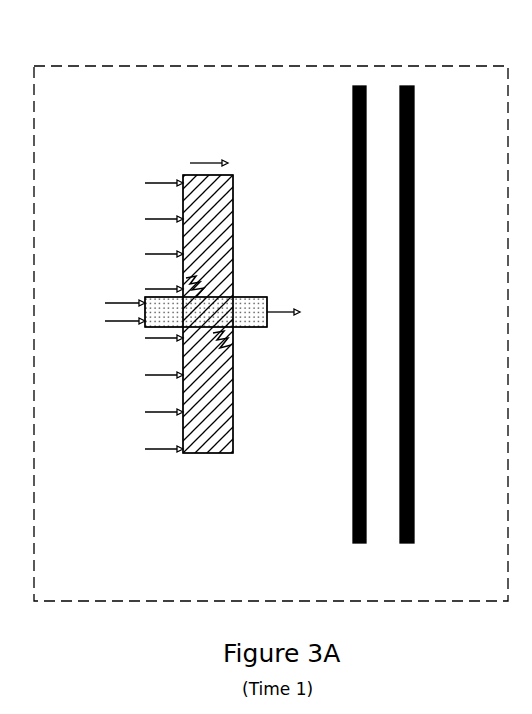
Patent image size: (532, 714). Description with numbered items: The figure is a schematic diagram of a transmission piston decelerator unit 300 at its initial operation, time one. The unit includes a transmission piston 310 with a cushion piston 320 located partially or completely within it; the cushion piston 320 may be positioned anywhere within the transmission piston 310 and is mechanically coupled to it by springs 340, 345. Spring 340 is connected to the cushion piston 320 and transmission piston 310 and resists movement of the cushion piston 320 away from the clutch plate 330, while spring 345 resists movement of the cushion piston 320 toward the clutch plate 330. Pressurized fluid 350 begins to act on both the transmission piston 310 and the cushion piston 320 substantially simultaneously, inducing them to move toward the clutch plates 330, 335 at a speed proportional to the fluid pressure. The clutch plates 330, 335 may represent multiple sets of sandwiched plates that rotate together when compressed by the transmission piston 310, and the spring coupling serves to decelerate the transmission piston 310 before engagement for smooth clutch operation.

The transmission piston decelerator unit 300 is at (111, 62).
The transmission piston 310 is at (236, 185).
The cushion piston 320 is at (158, 330).
The clutch plate 330 is at (351, 140).
The clutch plate 335 is at (417, 143).
The spring 340 is at (211, 284).
The spring 345 is at (234, 348).
The pressurized fluid 350 is at (99, 304).